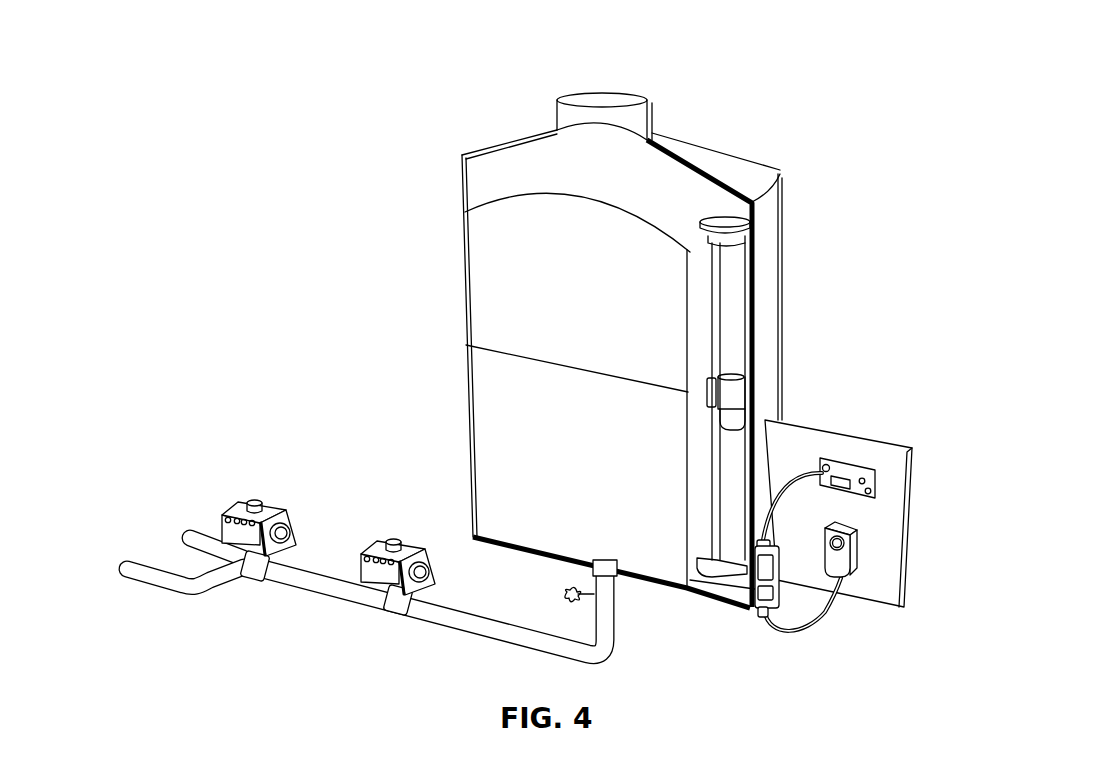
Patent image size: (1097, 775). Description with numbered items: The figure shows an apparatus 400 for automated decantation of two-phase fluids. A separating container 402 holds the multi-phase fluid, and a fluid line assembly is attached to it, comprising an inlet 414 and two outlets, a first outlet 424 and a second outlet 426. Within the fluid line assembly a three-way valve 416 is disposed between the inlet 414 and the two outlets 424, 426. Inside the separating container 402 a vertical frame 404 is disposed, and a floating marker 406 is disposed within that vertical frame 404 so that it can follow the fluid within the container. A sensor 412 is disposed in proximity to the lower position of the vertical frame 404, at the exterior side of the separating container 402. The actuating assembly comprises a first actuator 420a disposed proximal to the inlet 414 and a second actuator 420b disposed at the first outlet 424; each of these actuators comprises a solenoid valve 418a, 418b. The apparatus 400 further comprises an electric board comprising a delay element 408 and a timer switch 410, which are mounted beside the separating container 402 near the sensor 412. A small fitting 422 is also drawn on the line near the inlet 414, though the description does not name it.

The apparatus 400 is at (828, 34).
The separating container 402 is at (705, 152).
The vertical frame 404 is at (735, 220).
The floating marker 406 is at (737, 392).
The delay element 408 is at (842, 470).
The timer switch 410 is at (843, 560).
The sensor 412 is at (783, 592).
The inlet 414 is at (606, 605).
The three-way valve 416 is at (256, 568).
The solenoid valve 418a is at (378, 578).
The solenoid valve 418b is at (226, 530).
The first actuator 420a is at (389, 540).
The second actuator 420b is at (273, 502).
The clip 422 is at (574, 591).
The first outlet 424 is at (185, 537).
The outlet 426 is at (122, 567).